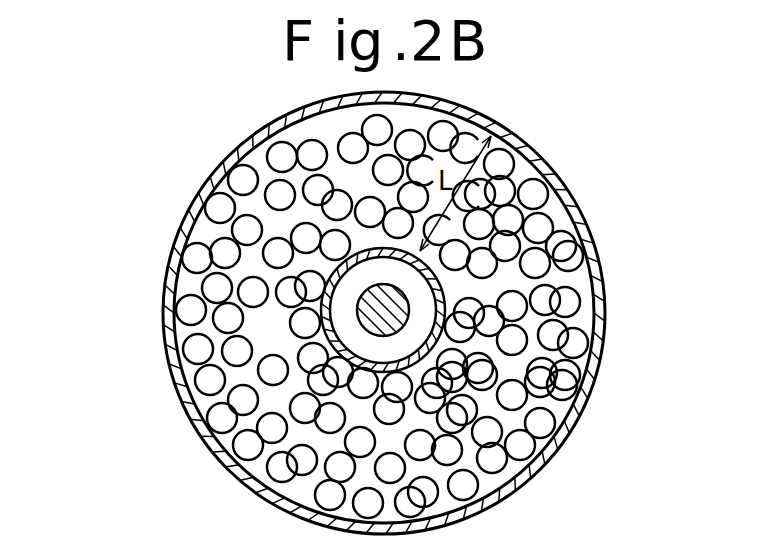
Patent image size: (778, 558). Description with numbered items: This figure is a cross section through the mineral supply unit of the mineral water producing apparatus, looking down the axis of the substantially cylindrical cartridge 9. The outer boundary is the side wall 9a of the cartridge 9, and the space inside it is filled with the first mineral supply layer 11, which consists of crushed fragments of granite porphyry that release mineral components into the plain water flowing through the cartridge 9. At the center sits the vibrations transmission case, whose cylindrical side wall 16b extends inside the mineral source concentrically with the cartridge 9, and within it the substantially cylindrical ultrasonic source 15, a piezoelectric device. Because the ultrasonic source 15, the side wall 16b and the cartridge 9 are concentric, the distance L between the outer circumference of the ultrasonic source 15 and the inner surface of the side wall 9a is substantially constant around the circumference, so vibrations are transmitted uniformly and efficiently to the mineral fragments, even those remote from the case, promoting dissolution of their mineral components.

The cartridge 9 is at (583, 219).
The side wall of the cartridge 9a is at (520, 163).
The cylindrical side wall of the vibrations transmission case 16b is at (440, 305).
The ultrasonic source 15 is at (367, 313).
The first mineral supply layer 11 is at (548, 432).